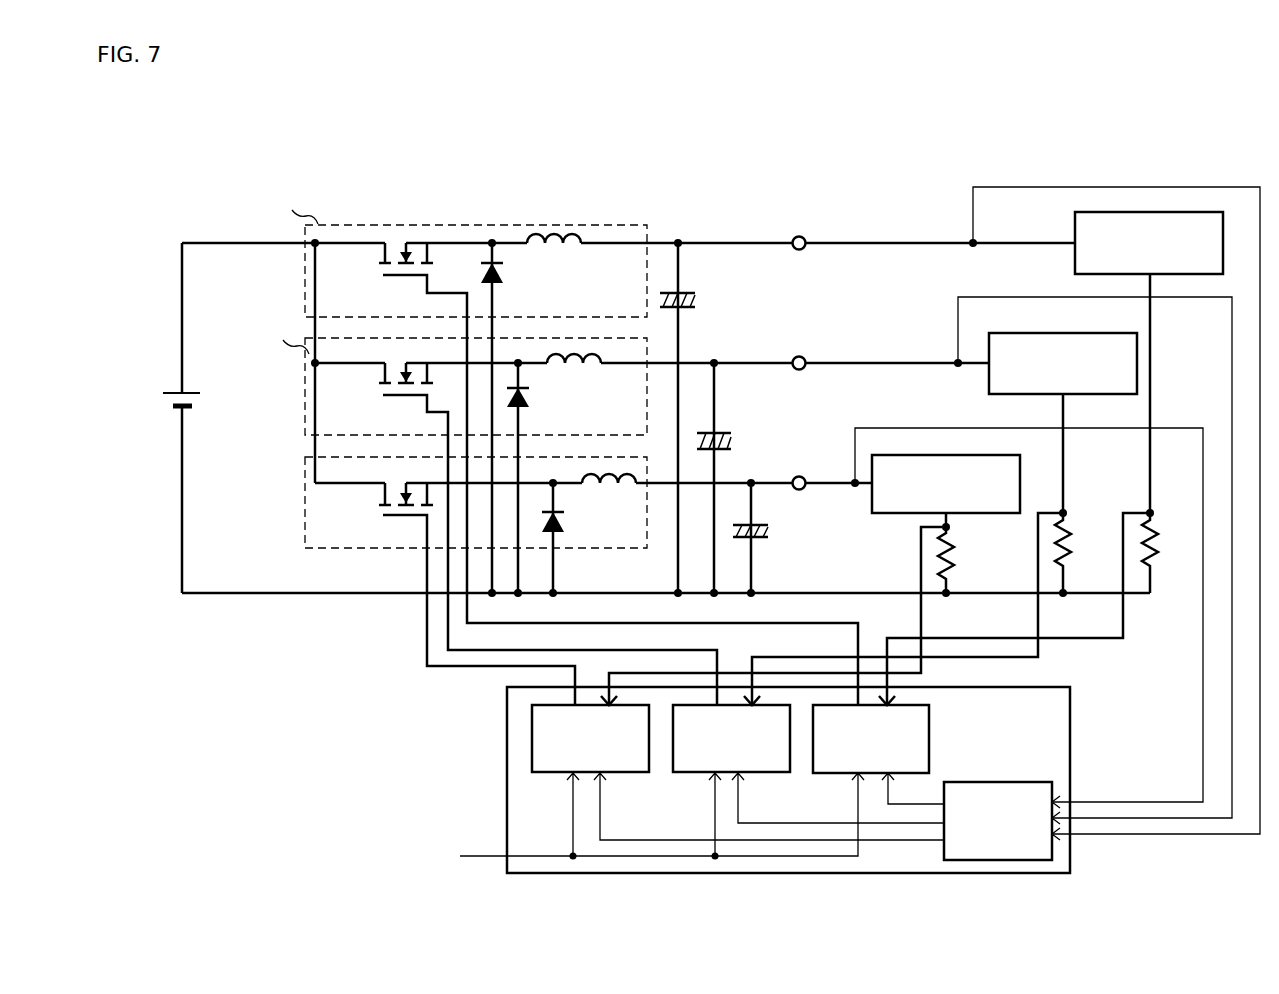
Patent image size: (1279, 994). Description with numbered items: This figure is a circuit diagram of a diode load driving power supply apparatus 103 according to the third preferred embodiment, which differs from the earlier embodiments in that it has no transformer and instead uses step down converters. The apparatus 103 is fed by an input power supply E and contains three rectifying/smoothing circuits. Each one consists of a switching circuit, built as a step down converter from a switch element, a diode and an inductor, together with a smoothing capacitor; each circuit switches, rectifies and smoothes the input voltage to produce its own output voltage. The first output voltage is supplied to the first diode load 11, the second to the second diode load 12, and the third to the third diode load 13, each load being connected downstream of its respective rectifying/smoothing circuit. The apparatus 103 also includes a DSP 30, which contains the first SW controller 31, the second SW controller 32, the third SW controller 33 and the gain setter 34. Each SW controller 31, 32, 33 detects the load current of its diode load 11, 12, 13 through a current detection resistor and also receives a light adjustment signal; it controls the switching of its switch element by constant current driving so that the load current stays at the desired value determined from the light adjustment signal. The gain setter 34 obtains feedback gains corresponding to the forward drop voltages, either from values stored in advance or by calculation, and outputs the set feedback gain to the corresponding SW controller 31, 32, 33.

The diode load driving power supply apparatus 103 is at (686, 530).
The first diode load 11 is at (1223, 222).
The second diode load 12 is at (1010, 334).
The third diode load 13 is at (1020, 467).
The DSP 30 is at (1070, 687).
The first SW controller 31 is at (842, 772).
The second SW controller 32 is at (702, 772).
The third SW controller 33 is at (561, 772).
The gain setter 34 is at (1017, 782).